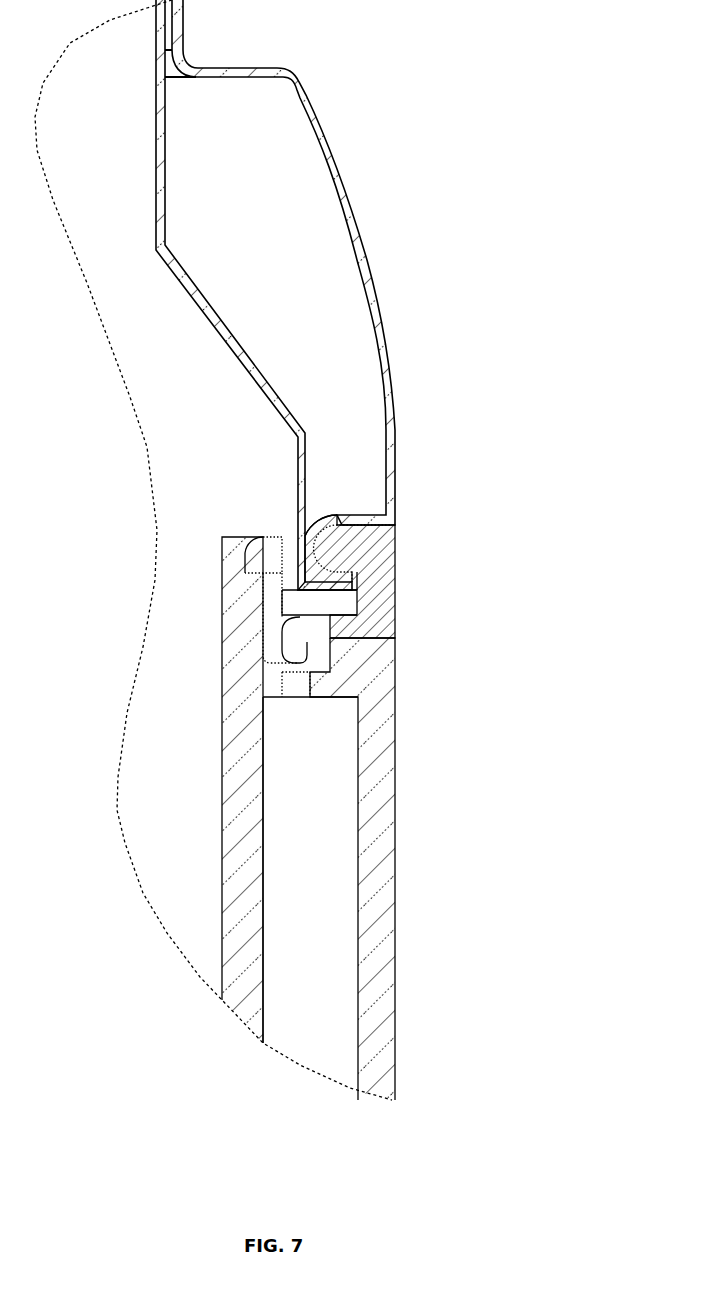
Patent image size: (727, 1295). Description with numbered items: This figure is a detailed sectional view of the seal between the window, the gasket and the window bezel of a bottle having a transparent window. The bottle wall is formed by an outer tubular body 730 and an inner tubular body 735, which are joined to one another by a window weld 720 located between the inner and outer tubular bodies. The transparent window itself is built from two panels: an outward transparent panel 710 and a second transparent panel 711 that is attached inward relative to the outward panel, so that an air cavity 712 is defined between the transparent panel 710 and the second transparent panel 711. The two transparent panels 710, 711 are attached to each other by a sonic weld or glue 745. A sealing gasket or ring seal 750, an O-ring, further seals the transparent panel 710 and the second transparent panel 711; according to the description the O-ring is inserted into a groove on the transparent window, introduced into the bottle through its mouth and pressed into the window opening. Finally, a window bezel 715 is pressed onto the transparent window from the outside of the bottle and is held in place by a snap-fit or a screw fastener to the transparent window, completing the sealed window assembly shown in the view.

The transparent panel 710 is at (399, 770).
The second transparent panel 711 is at (268, 797).
The air cavity 712 is at (318, 880).
The window bezel 715 is at (397, 582).
The window weld 720 is at (355, 572).
The outer tubular body 730 is at (352, 197).
The inner tubular body 735 is at (253, 357).
The sonic weld or glue 745 is at (305, 662).
The sealing gasket or ring seal 750 is at (272, 533).